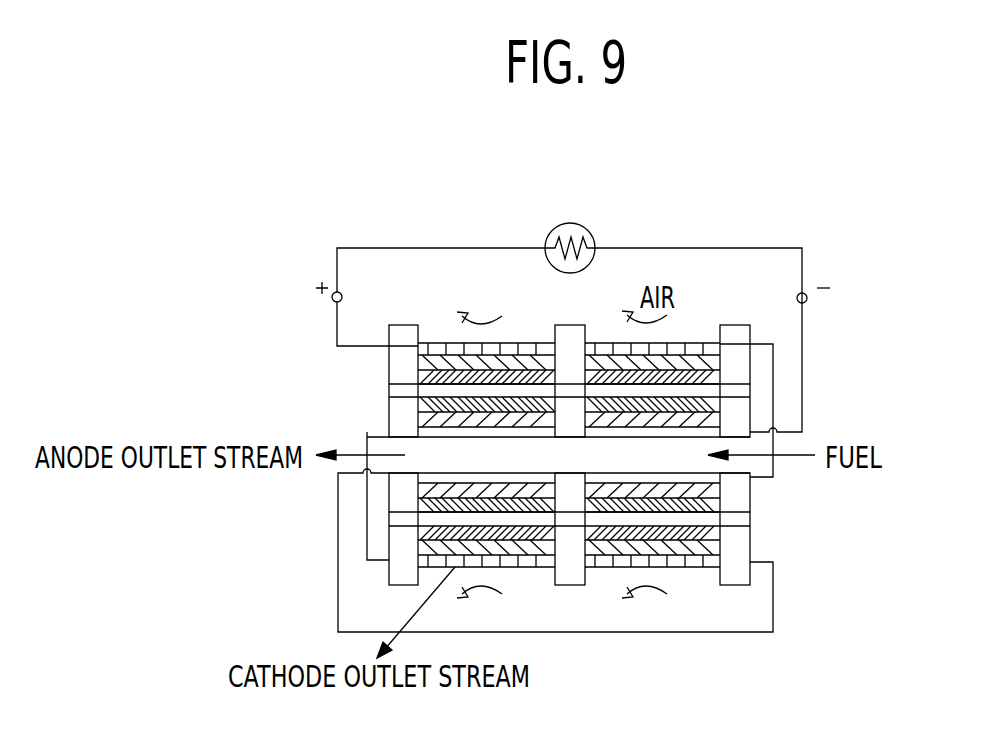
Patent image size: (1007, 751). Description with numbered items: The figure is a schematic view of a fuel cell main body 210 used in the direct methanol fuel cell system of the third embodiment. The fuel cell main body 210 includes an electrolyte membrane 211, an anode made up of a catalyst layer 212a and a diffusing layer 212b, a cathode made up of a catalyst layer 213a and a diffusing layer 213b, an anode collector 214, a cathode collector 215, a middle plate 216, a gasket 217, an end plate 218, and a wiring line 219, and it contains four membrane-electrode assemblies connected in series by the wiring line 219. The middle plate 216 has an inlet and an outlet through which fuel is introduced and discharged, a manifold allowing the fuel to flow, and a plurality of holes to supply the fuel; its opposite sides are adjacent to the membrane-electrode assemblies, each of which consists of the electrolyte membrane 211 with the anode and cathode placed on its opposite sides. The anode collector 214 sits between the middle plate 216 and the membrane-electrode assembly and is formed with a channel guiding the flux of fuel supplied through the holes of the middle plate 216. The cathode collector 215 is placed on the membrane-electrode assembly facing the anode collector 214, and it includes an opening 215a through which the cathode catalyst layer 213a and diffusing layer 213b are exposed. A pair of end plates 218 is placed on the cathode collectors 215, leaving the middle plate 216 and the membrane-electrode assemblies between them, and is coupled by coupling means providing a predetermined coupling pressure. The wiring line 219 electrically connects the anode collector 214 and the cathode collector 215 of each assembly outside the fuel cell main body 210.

The fuel cell main body 210 is at (293, 193).
The electrolyte membrane 211 is at (743, 518).
The catalyst layer 212a is at (722, 398).
The diffusing layer 212b is at (713, 422).
The catalyst layer 213a is at (737, 528).
The diffusing layer 213b is at (733, 547).
The anode collector 214 is at (740, 482).
The cathode collector 215 is at (707, 343).
The opening 215a is at (688, 343).
The middle plate 216 is at (737, 465).
The gasket 217 is at (737, 371).
The end plate 218 is at (738, 575).
The wiring line 219 is at (557, 632).